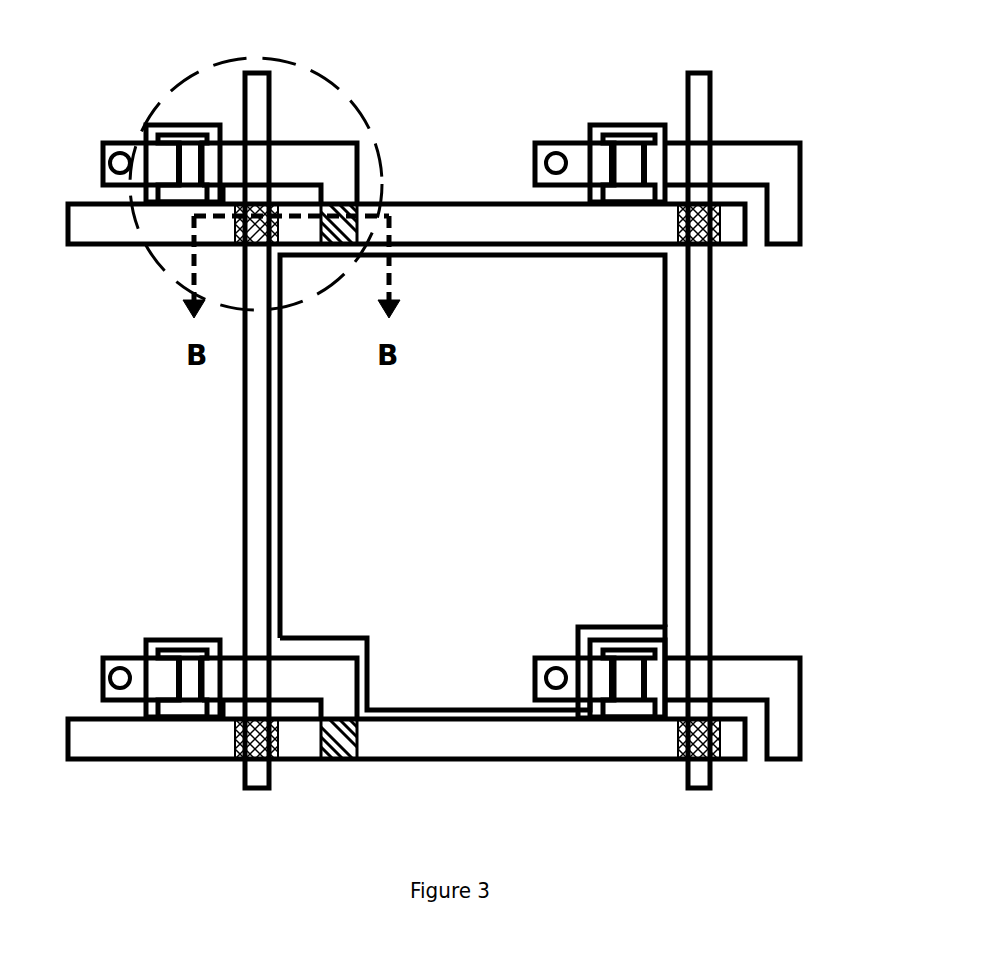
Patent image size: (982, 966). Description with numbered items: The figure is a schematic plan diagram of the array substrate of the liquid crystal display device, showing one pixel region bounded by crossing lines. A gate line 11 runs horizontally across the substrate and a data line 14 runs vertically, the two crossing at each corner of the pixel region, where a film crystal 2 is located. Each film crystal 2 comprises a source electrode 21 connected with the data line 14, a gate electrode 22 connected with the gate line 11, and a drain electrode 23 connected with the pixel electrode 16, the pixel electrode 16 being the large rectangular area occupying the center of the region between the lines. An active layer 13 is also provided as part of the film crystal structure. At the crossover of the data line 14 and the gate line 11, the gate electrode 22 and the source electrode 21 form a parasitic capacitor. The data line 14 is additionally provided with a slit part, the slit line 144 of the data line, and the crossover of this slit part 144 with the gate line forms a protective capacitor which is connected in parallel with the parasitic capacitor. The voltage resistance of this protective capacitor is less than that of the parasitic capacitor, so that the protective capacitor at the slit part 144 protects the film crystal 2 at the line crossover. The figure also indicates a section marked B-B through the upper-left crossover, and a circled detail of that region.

The gate line 11 is at (411, 232).
The active layer 13 is at (233, 230).
The data line 14 is at (260, 276).
The slit line of data line 144 is at (345, 144).
The pixel electrode 16 is at (627, 478).
The film crystal 2 is at (633, 674).
The source electrode 21 is at (664, 680).
The gate electrode 22 is at (638, 725).
The drain electrode 23 is at (585, 687).